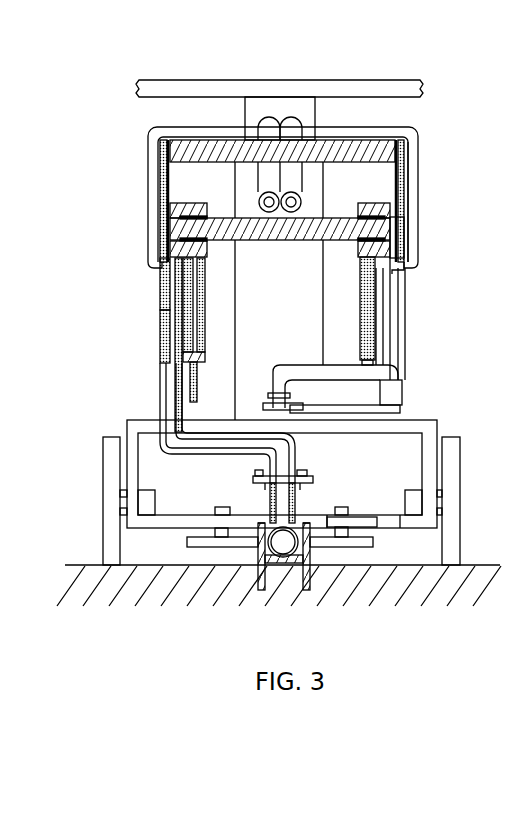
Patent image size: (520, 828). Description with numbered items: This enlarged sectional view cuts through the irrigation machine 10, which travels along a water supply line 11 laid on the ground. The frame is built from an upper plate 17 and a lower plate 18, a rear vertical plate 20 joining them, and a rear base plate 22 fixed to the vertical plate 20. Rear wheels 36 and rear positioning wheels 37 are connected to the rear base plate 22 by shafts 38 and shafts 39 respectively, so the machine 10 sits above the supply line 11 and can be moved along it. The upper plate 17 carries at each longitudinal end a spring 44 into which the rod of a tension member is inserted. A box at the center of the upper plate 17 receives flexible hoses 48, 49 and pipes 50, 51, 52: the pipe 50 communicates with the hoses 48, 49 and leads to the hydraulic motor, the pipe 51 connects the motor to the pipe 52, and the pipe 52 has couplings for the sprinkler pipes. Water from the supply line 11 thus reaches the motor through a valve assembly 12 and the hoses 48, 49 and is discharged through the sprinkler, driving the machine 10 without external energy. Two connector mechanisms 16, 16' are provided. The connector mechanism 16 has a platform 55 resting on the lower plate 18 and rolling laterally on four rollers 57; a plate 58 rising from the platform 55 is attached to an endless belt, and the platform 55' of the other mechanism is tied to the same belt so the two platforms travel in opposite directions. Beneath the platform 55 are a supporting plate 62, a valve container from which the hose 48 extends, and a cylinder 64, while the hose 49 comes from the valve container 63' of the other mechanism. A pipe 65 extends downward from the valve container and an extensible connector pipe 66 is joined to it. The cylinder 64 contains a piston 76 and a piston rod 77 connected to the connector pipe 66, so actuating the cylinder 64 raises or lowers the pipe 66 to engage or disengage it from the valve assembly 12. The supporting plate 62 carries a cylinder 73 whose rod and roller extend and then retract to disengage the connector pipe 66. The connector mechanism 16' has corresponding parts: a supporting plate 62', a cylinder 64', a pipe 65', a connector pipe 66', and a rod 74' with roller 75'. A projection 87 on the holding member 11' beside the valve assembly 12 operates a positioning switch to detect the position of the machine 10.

The irrigation machine 10 is at (336, 63).
The pipe 51 is at (265, 128).
The spring 44 is at (264, 107).
The pipe 50 is at (289, 128).
The pipe 52 is at (385, 88).
The flexible hose 48 is at (149, 133).
The plate 58 is at (160, 166).
The upper plate 17 is at (377, 143).
The flexible hose 49 is at (412, 143).
The rollers 57 is at (195, 204).
The lower plate 18 is at (335, 232).
The platform 55 is at (123, 223).
The platform 55' is at (430, 233).
The valve container 63' is at (430, 259).
The connector mechanism 16' is at (442, 318).
The pipe 65 is at (128, 284).
The connector mechanism 16 is at (123, 305).
The cylinder 64 is at (214, 305).
The supporting plate 62 is at (135, 336).
The piston 76 is at (192, 355).
The piston rod 77 is at (196, 388).
The extensible connector pipe 66 is at (197, 423).
The rear vertical plate 20 is at (323, 277).
The tube 64' is at (352, 311).
The valve stem 75' is at (283, 376).
The plate 74' is at (345, 400).
The outer tube 65' is at (420, 316).
The tube 62' is at (431, 324).
The conduit 66' is at (369, 384).
The cylinder 73 is at (392, 394).
The rear base plate 22 is at (418, 425).
The rear wheels 36 is at (108, 460).
The shafts 38 is at (146, 498).
The shafts 39 is at (221, 508).
The valve assembly 12 is at (317, 496).
The projection 87 is at (310, 518).
The rear positioning wheels 37 is at (190, 546).
The water supply line 11 is at (284, 575).
The holding member 11' is at (266, 574).